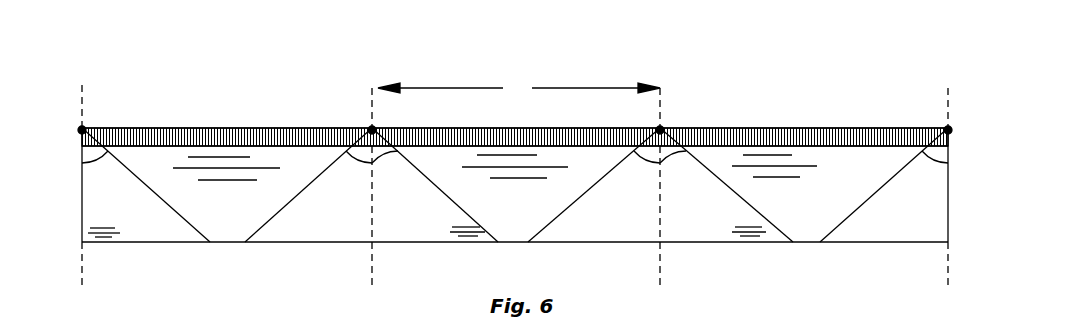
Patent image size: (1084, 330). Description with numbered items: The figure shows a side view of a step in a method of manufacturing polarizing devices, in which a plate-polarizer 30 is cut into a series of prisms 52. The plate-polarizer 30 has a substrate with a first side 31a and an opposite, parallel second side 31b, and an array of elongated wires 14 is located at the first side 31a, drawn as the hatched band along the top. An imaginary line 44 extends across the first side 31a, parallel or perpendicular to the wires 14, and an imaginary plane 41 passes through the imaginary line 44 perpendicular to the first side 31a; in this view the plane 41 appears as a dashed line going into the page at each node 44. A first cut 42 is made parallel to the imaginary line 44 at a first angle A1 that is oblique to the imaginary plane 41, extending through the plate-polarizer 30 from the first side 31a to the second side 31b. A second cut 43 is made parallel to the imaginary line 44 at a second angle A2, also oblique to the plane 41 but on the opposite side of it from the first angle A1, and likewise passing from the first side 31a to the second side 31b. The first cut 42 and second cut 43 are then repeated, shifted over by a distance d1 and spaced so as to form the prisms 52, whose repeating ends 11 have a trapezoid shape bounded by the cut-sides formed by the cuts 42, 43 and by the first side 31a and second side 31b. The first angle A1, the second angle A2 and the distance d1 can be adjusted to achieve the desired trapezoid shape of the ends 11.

The plate-polarizer 30 is at (212, 73).
The elongated wires 14 is at (830, 135).
The imaginary plane 41 is at (84, 88).
The imaginary line 44 is at (87, 130).
The shifted over distance d1 is at (519, 88).
The first cut 42 is at (163, 198).
The second cut 43 is at (293, 197).
The ends 11 is at (211, 213).
The first angle A1 is at (102, 162).
The second angle A2 is at (352, 160).
The prisms 52 is at (510, 233).
The first side 31a is at (871, 147).
The second side 31b is at (858, 247).